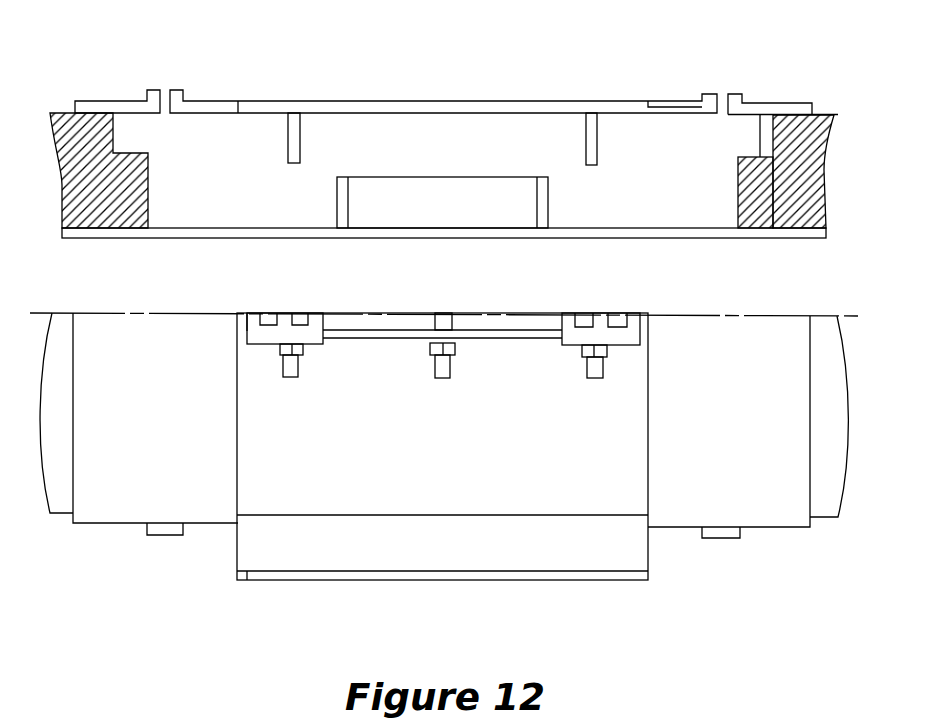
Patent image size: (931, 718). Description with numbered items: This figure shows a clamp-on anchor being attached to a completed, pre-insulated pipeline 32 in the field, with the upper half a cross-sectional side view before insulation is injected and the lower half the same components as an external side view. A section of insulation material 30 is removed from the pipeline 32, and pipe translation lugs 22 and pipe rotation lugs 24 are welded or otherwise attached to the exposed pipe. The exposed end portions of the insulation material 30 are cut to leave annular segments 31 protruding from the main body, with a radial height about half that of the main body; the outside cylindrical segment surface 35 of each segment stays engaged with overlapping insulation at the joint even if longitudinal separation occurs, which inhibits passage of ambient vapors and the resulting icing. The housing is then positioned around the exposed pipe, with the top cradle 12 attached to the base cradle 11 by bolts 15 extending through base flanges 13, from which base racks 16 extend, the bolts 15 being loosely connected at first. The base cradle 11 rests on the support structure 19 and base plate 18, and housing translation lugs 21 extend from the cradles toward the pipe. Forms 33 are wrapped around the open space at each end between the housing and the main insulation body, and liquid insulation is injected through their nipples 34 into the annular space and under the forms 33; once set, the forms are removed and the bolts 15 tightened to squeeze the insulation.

The base cradle 11 is at (262, 470).
The top cradle 12 is at (332, 101).
The base flanges 13 is at (512, 333).
The bolts 15 is at (443, 372).
The base racks 16 is at (310, 335).
The base plate 18 is at (560, 580).
The support structure 19 is at (612, 546).
The housing translation lugs 21 is at (288, 143).
The pipe translation lugs 22 is at (543, 183).
The pipe rotation lugs 24 is at (437, 203).
The insulation material 30 is at (97, 127).
The annular segments 31 is at (752, 185).
The pipeline 32 is at (772, 235).
The forms 33 is at (119, 108).
The nipples 34 is at (178, 90).
The outside cylindrical segment surface 35 is at (752, 187).